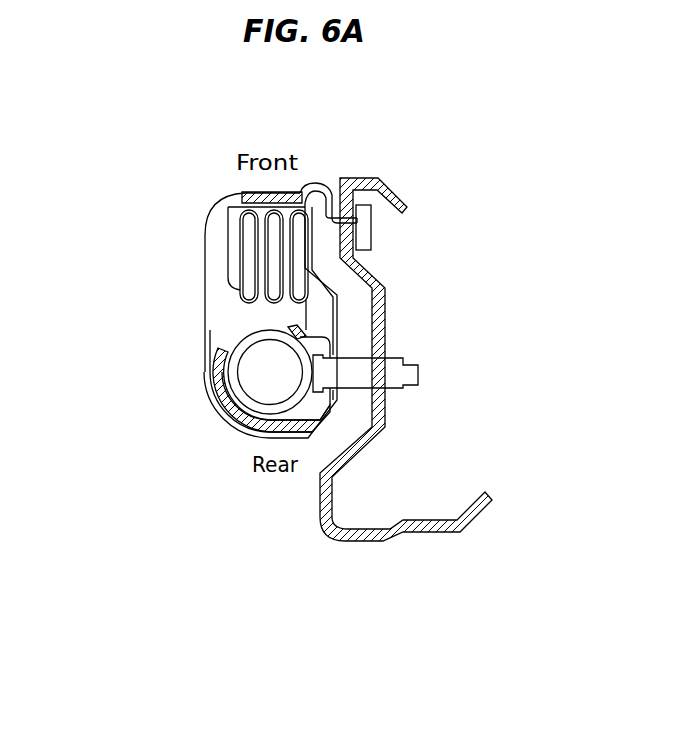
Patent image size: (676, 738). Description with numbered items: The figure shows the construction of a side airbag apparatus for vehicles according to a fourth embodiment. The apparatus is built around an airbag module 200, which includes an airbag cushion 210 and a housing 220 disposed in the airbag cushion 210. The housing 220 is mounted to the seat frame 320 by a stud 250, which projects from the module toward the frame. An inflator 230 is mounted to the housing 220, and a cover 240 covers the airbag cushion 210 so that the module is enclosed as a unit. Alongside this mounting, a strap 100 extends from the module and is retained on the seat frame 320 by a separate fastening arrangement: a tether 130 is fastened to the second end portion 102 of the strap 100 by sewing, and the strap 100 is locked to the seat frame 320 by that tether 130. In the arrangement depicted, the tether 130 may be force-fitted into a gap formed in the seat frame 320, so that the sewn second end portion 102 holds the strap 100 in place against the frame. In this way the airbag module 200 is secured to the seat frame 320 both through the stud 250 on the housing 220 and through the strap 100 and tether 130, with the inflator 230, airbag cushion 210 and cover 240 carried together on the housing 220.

The strap 100 is at (318, 183).
The second end portion 102 is at (372, 250).
The tether 130 is at (372, 223).
The airbag module 200 is at (186, 220).
The airbag cushion 210 is at (237, 197).
The housing 220 is at (220, 418).
The inflator 230 is at (236, 367).
The cover 240 is at (205, 280).
The stud 250 is at (407, 375).
The seat frame 320 is at (320, 507).